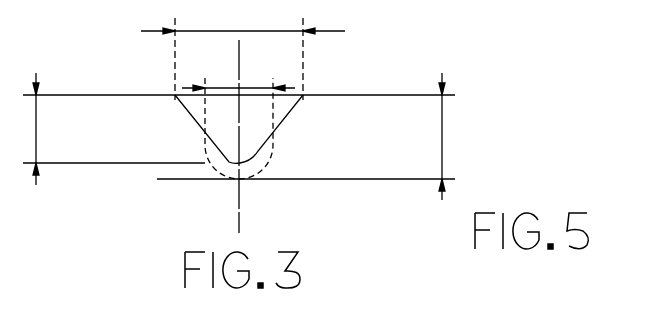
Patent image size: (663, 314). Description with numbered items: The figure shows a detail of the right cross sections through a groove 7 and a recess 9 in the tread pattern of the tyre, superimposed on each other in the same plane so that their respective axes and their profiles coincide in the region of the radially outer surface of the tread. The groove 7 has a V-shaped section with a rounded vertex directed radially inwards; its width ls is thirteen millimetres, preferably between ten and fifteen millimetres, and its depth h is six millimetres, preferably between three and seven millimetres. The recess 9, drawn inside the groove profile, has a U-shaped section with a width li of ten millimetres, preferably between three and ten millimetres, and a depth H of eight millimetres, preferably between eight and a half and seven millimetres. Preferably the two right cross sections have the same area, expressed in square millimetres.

The groove 7 is at (280, 125).
The recess 9 is at (254, 168).
The width of the groove ls is at (235, 2).
The width of the recess li is at (250, 57).
The depth of the groove h is at (32, 147).
The depth of the recess H is at (464, 137).